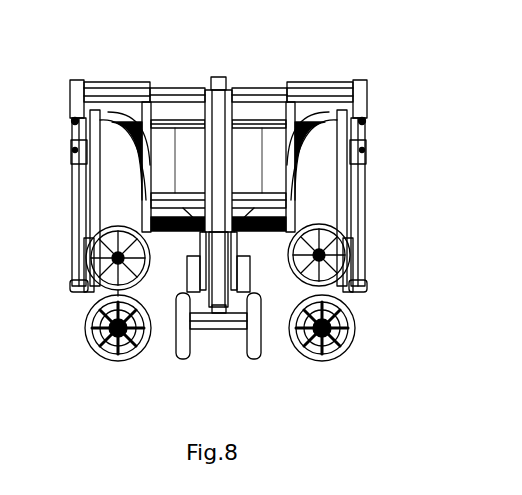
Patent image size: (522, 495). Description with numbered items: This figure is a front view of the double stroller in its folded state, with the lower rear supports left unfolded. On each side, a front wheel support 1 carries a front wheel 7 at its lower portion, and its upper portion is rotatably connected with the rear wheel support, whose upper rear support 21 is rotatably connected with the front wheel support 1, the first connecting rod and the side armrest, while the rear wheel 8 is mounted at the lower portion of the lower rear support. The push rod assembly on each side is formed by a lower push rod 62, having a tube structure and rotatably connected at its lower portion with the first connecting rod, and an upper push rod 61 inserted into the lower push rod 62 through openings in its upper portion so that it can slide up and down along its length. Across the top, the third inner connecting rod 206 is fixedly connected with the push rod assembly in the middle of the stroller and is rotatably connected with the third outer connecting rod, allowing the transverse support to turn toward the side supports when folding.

The front wheel support 1 is at (72, 252).
The third inner connecting rod 206 is at (173, 92).
The upper push rod 61 is at (73, 122).
The lower push rod 62 is at (76, 150).
The upper rear support 21 is at (103, 184).
The front wheel 7 is at (88, 290).
The rear wheel 8 is at (90, 349).